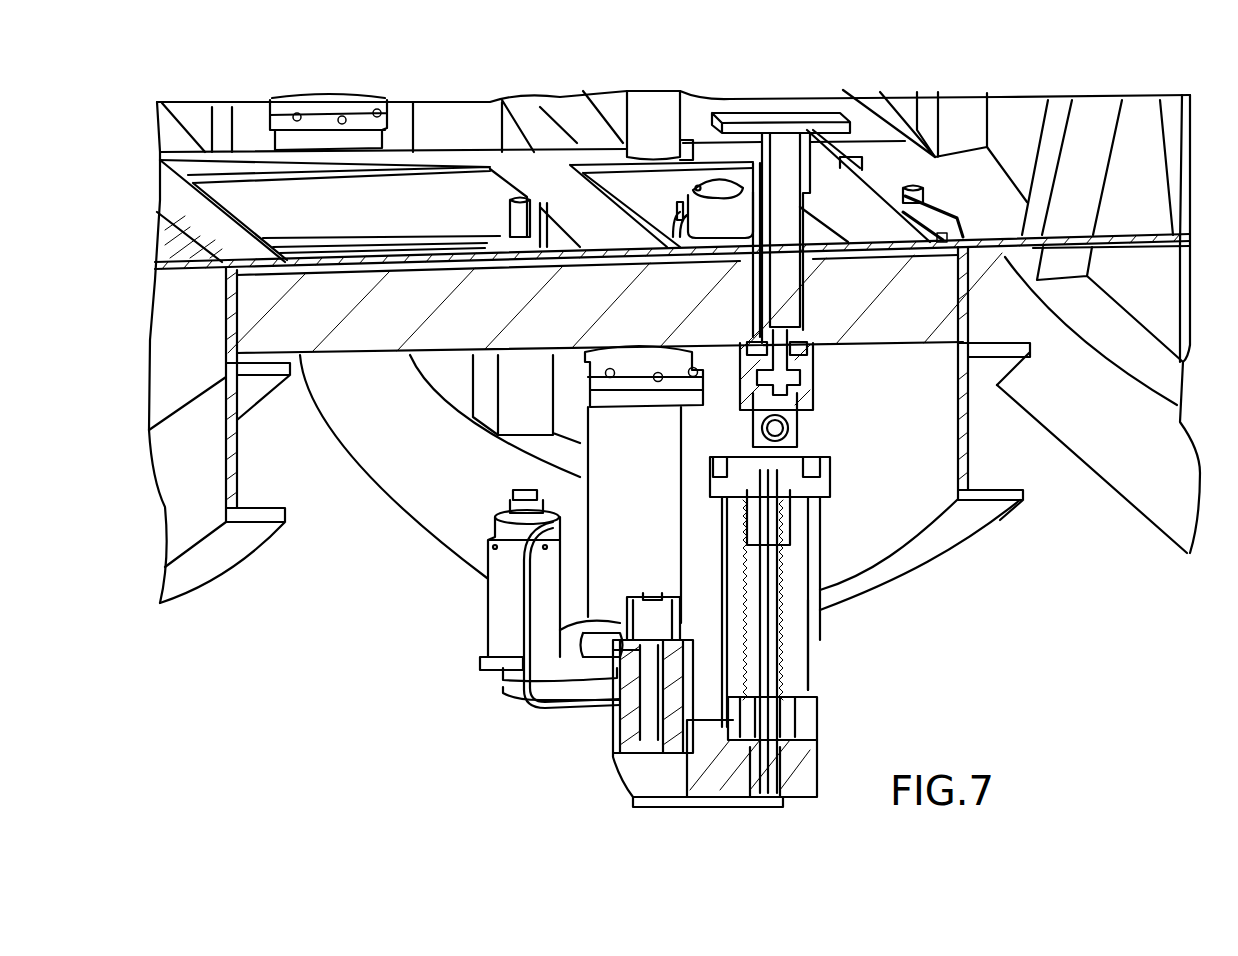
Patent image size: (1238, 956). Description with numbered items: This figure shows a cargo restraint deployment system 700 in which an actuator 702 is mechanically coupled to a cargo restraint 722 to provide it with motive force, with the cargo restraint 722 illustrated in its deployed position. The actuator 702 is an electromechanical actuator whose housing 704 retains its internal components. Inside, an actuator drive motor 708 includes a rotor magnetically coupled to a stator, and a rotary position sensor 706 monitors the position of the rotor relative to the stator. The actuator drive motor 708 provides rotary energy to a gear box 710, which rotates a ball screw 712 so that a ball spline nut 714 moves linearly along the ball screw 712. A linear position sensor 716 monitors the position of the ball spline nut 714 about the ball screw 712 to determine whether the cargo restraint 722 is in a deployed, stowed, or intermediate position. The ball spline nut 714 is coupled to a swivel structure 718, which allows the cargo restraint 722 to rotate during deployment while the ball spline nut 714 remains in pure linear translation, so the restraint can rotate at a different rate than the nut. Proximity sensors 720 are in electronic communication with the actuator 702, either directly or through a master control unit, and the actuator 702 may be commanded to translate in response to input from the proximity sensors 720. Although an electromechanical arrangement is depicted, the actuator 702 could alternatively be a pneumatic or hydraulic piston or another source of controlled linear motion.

The cargo restraint deployment system 700 is at (374, 736).
The actuator 702 is at (723, 517).
The housing 704 is at (805, 690).
The rotary position sensor 706 is at (650, 637).
The actuator drive motor 708 is at (623, 713).
The gear box 710 is at (693, 777).
The ball screw 712 is at (785, 600).
The ball spline nut 714 is at (747, 540).
The linear position sensor 716 is at (757, 790).
The swivel structure 718 is at (790, 390).
The proximity sensors 720 is at (965, 243).
The cargo restraint 722 is at (787, 313).